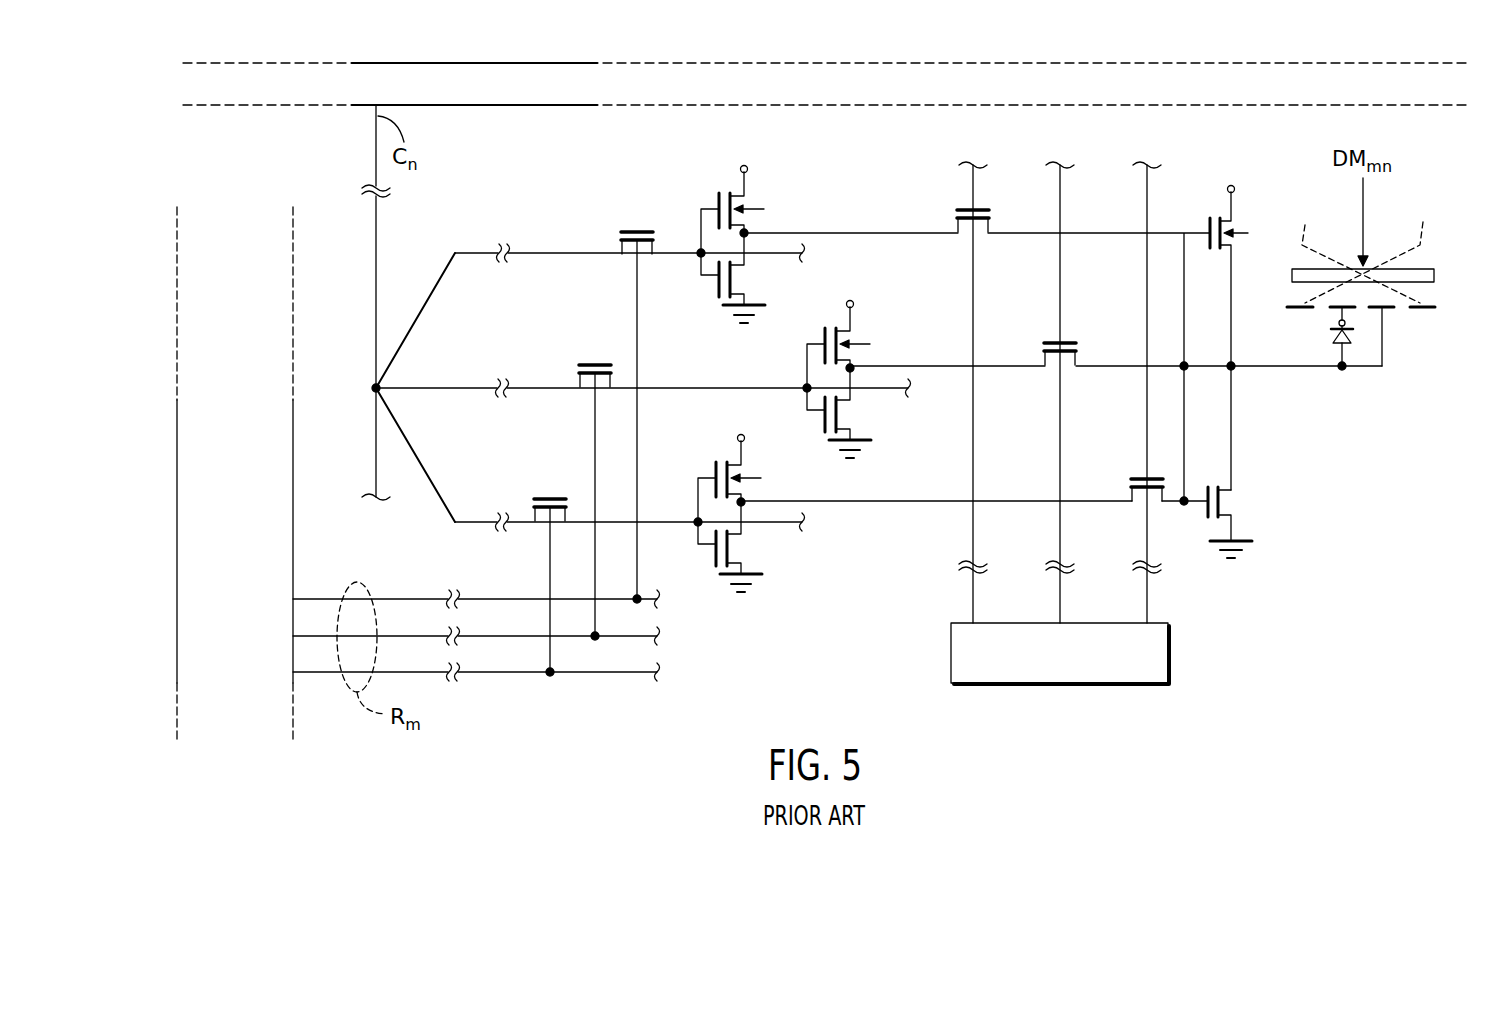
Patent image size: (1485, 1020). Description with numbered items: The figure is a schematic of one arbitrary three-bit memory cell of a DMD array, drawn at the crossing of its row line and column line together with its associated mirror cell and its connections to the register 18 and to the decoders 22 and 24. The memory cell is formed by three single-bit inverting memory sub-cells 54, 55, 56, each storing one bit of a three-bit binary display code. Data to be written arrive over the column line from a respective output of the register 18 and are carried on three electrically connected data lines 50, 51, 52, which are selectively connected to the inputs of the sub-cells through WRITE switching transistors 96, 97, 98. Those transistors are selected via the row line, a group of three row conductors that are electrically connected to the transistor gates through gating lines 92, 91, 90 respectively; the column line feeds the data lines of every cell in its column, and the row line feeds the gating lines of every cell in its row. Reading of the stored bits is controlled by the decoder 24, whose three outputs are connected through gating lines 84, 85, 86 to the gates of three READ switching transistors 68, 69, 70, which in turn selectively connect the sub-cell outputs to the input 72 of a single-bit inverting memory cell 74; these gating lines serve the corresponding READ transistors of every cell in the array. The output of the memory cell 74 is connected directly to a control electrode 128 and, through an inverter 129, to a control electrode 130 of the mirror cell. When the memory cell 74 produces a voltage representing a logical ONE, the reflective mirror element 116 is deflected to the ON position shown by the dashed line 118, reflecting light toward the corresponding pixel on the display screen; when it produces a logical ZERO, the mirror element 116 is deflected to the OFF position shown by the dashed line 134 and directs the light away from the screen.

The register 18 is at (534, 96).
The decoder 22 is at (247, 501).
The decoder 24 is at (1126, 666).
The data line 50 is at (543, 258).
The data line 51 is at (543, 393).
The data line 52 is at (480, 527).
The single-bit inverting memory sub-cell 54 is at (695, 261).
The single-bit inverting memory sub-cell 55 is at (800, 379).
The single-bit inverting memory sub-cell 56 is at (696, 518).
The READ switching transistor 68 is at (959, 209).
The READ switching transistor 69 is at (1047, 342).
The READ switching transistor 70 is at (1133, 478).
The input 72 is at (1187, 369).
The single-bit inverting memory cell 74 is at (1244, 374).
The gating line 84 is at (969, 185).
The gating line 85 is at (1056, 193).
The gating line 86 is at (1143, 193).
The gating line 90 is at (552, 577).
The gating line 91 is at (595, 577).
The gating line 92 is at (637, 577).
The WRITE switching transistor 96 is at (634, 228).
The WRITE switching transistor 97 is at (598, 360).
The WRITE switching transistor 98 is at (558, 492).
The reflective mirror element 116 is at (1436, 274).
The dashed line 118 is at (1352, 248).
The control electrode 128 is at (1383, 315).
The inverter 129 is at (1351, 338).
The control electrode 130 is at (1335, 318).
The dashed line 134 is at (1380, 248).